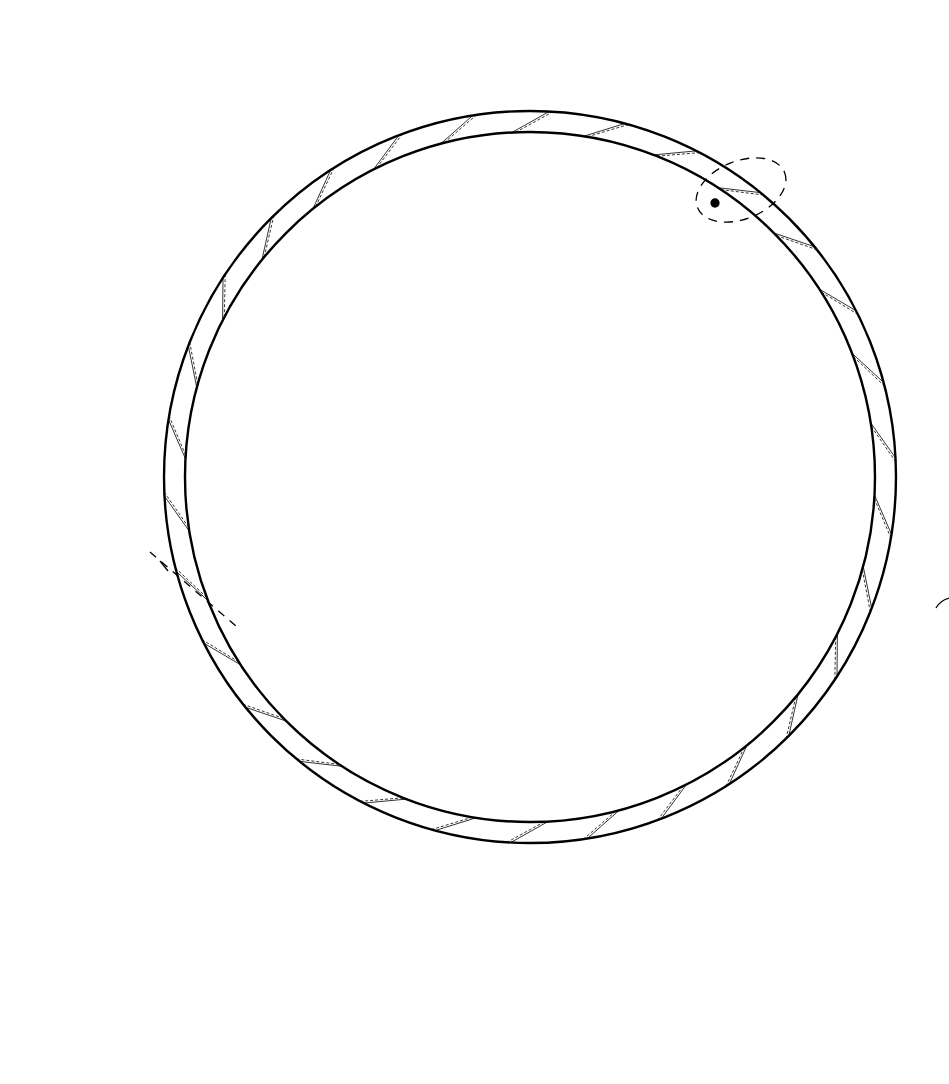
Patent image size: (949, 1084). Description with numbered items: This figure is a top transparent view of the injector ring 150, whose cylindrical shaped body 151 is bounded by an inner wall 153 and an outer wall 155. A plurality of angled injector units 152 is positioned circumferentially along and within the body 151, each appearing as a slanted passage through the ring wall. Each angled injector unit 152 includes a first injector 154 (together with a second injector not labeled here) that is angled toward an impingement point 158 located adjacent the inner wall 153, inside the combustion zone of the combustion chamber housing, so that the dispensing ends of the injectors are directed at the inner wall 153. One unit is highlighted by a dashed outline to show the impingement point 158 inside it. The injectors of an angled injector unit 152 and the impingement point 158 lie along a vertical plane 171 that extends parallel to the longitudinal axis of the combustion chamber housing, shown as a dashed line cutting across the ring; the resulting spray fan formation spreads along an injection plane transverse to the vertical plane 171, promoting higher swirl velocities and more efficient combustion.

The injector ring 150 is at (283, 106).
The body 151 is at (798, 224).
The angled injector unit 152 is at (773, 158).
The inner wall 153 is at (826, 315).
The first injector 154 is at (600, 132).
The outer wall 155 is at (850, 287).
The impingement point 158 is at (711, 209).
The vertical plane 171 is at (164, 566).